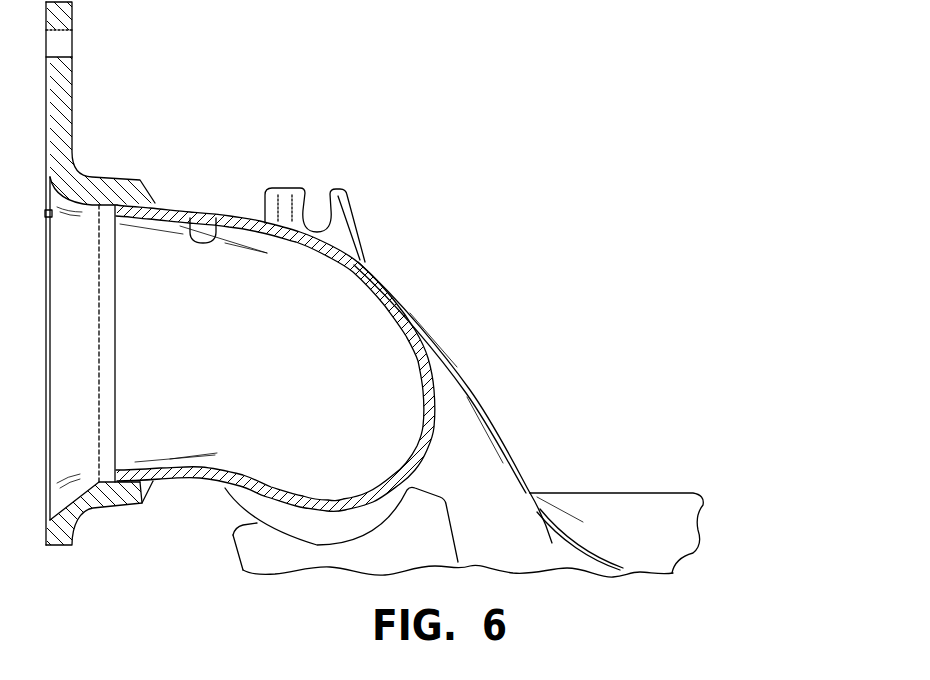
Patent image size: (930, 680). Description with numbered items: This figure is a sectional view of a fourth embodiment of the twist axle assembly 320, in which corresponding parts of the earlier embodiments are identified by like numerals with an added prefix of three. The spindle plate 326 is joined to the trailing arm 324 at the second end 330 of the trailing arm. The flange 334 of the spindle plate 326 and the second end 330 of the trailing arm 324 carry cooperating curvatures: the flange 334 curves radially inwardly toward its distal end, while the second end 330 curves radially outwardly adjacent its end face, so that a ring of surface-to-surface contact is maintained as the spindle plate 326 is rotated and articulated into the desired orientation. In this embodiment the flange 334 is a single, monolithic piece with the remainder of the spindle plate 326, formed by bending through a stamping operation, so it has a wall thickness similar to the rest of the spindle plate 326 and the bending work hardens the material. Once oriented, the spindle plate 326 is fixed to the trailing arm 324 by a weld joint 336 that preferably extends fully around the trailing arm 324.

The twist axle assembly 320 is at (405, 206).
The trailing arm 324 is at (466, 357).
The spindle plate 326 is at (80, 75).
The second end 330 is at (217, 218).
The flange 334 is at (90, 510).
The weld joint 336 is at (143, 490).